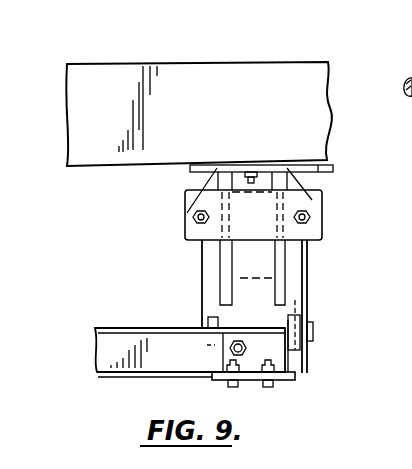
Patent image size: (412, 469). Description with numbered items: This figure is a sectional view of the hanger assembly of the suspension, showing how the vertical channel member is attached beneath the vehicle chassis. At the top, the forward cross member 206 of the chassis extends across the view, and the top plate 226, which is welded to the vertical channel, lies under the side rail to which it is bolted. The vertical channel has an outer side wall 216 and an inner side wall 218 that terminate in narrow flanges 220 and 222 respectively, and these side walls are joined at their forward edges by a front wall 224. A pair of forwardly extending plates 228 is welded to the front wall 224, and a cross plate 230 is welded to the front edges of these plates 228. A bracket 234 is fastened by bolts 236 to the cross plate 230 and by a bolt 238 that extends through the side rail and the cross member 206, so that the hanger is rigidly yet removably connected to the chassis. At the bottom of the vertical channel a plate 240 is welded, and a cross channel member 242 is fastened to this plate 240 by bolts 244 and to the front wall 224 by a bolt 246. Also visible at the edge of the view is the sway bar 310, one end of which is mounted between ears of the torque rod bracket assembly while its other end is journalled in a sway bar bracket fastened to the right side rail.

The forward cross member 206 is at (210, 72).
The top plate 226 is at (318, 170).
The bracket 234 is at (322, 198).
The bolts 236 is at (193, 217).
The bolt 238 is at (254, 172).
The cross plate 230 is at (320, 240).
The forwardly extending plates 228 is at (225, 250).
The outer side wall 216 is at (307, 292).
The inner side wall 218 is at (220, 287).
The narrow flange 222 is at (203, 300).
The narrow flange 220 is at (297, 305).
The front wall 224 is at (313, 322).
The cross channel member 242 is at (105, 362).
The bolt 246 is at (238, 357).
The bolts 244 is at (232, 380).
The plate 240 is at (297, 378).
The sway bar 310 is at (408, 96).